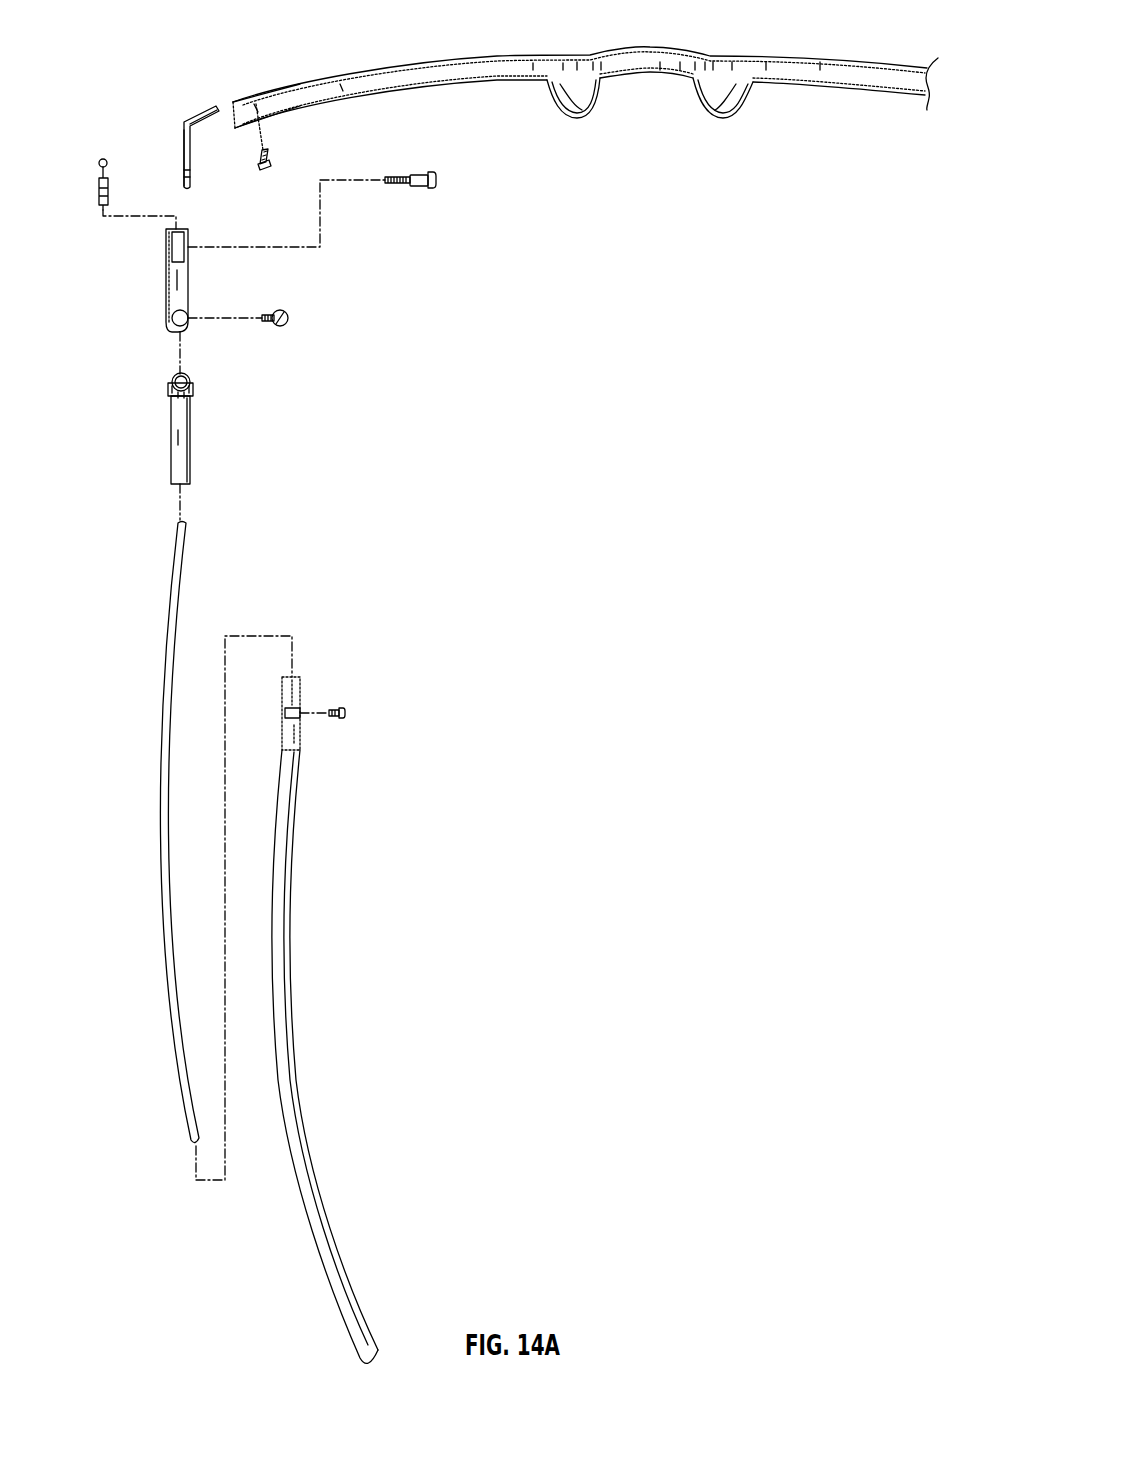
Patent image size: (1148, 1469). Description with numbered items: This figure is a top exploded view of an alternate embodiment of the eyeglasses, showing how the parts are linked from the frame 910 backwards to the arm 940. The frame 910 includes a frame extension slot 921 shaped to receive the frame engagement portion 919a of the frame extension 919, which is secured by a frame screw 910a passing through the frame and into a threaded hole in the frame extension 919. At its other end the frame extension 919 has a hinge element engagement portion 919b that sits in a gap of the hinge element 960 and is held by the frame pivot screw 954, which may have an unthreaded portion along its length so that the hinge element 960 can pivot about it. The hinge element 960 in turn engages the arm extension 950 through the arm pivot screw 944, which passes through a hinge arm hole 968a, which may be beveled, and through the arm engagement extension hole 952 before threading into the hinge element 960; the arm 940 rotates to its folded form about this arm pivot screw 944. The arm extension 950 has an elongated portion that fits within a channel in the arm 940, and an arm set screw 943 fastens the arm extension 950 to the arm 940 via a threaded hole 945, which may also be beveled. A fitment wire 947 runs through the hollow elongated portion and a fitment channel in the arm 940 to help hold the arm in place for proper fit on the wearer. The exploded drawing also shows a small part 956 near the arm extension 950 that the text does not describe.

The frame 910 is at (862, 60).
The frame screw 910a is at (268, 165).
The frame extension 919 is at (184, 121).
The frame engagement portion 919a is at (206, 113).
The hinge element engagement portion 919b is at (183, 156).
The frame extension slot 921 is at (256, 104).
The arm 940 is at (318, 1222).
The arm set screw 943 is at (346, 713).
The arm pivot screw 944 is at (288, 311).
The threaded hole 945 is at (294, 690).
The fitment wire 947 is at (160, 766).
The arm extension 950 is at (193, 466).
The arm engagement extension hole 952 is at (188, 377).
The frame pivot screw 954 is at (437, 174).
The hinge pin 956 is at (186, 396).
The hinge element 960 is at (163, 272).
The hinge arm hole 968a is at (186, 311).